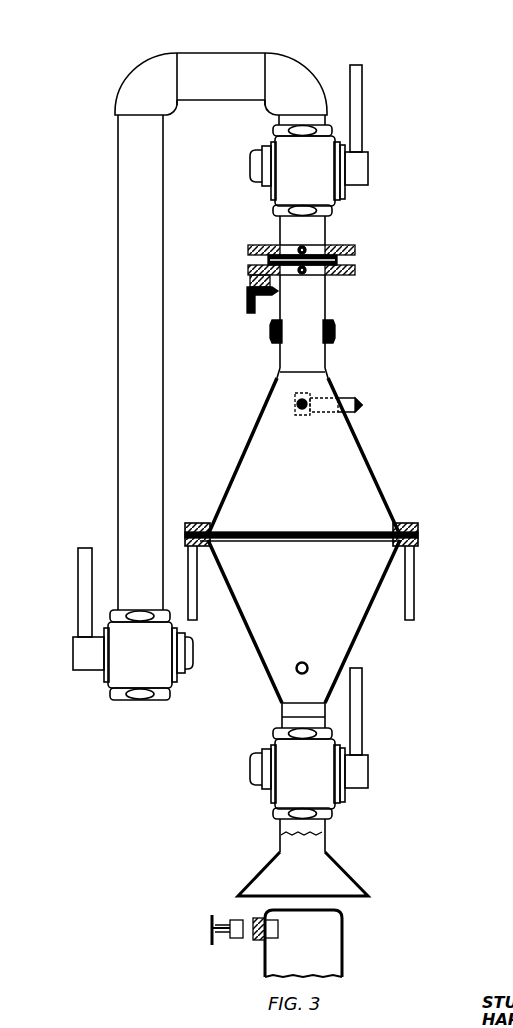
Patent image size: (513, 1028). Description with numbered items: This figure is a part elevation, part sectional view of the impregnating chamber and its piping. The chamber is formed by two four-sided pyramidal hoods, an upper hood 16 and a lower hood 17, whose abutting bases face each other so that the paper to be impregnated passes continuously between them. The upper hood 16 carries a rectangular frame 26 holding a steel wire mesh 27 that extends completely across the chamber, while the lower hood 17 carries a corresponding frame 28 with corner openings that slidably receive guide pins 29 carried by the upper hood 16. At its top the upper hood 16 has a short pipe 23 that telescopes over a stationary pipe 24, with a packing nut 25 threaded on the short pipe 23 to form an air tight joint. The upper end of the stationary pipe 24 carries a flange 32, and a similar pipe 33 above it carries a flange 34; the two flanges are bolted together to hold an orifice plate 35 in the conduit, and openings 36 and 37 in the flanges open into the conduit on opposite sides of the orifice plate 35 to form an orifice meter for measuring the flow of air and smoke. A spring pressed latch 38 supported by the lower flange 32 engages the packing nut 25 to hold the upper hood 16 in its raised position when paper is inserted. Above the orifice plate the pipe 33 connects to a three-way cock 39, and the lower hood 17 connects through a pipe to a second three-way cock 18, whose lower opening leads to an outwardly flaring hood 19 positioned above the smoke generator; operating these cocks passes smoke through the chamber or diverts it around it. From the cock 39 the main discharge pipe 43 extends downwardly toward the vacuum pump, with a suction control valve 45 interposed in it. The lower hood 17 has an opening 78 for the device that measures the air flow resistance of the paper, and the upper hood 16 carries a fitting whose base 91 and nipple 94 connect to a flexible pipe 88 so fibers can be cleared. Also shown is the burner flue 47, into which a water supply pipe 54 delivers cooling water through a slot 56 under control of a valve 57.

The upper hood 16 is at (248, 438).
The lower hood 17 is at (358, 628).
The three-way cock 18 is at (284, 802).
The outwardly flaring hood 19 is at (340, 868).
The short pipe 23 is at (328, 366).
The stationary pipe 24 is at (326, 307).
The packing nut 25 is at (272, 326).
The rectangular frame 26 is at (207, 530).
The steel wire mesh 27 is at (275, 532).
The frame 28 is at (188, 532).
The guide pins 29 is at (412, 598).
The flange 32 is at (337, 264).
The pipe 33 is at (312, 235).
The flange 34 is at (262, 247).
The orifice plate 35 is at (255, 266).
The opening 36 is at (308, 272).
The opening 37 is at (298, 248).
The spring pressed latch 38 is at (248, 292).
The three-way cock 39 is at (323, 197).
The main discharge pipe 43 is at (212, 67).
The suction control valve 45 is at (123, 678).
The burner flue 47 is at (345, 953).
The water supply pipe 54 is at (250, 932).
The slot 56 is at (270, 930).
The valve 57 is at (233, 922).
The opening 78 is at (309, 668).
The flexible pipe 88 is at (357, 410).
The base 91 is at (294, 395).
The nipple 94 is at (322, 399).